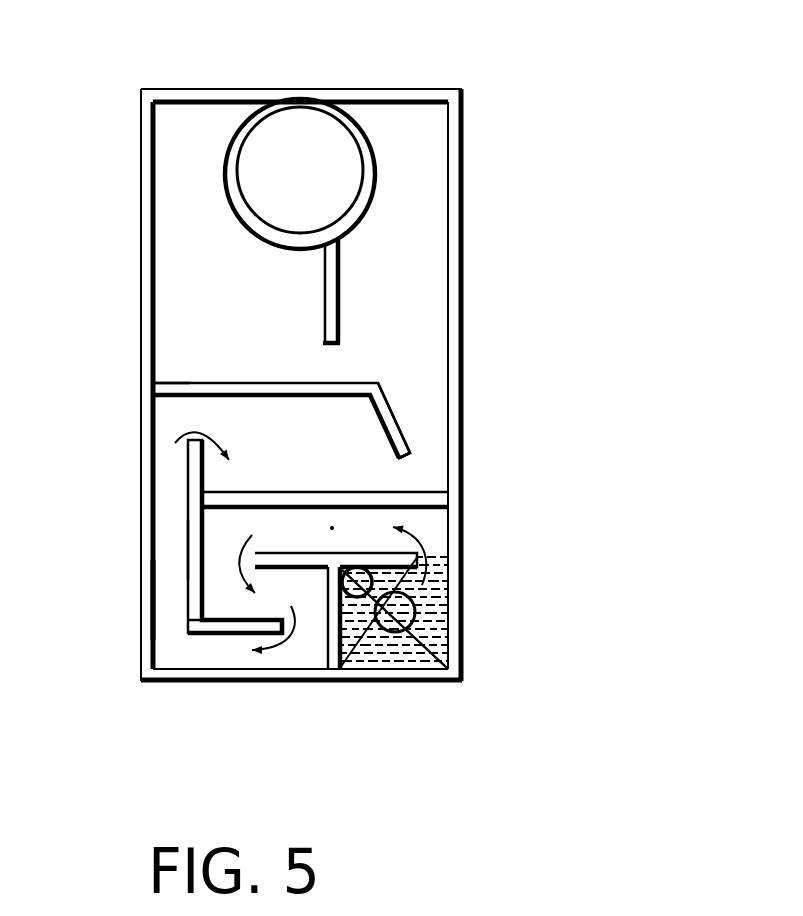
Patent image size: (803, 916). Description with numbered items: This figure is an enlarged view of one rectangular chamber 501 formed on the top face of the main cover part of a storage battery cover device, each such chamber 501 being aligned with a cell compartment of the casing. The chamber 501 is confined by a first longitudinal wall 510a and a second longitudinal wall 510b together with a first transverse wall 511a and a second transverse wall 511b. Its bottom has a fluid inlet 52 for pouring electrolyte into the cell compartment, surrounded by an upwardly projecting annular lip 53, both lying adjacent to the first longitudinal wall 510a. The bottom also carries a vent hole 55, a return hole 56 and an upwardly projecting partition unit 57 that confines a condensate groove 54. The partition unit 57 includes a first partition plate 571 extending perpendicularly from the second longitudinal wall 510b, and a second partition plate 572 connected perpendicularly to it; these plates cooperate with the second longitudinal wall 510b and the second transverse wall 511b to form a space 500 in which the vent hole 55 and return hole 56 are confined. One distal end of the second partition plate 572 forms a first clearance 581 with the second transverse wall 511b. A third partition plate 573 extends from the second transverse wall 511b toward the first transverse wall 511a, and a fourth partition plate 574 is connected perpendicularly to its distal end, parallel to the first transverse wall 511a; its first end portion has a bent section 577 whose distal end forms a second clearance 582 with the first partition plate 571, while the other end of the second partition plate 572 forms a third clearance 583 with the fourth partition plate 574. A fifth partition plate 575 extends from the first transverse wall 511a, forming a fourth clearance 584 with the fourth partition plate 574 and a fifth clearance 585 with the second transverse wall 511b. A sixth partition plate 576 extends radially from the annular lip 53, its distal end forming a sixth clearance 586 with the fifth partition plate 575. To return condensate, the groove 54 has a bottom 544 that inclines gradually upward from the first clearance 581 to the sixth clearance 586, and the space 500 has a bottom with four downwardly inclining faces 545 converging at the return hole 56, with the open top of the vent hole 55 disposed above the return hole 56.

The chamber 501 is at (181, 128).
The first longitudinal wall 510a is at (428, 96).
The second longitudinal wall 510b is at (143, 678).
The first transverse wall 511a is at (148, 172).
The second transverse wall 511b is at (458, 127).
The fluid inlet 52 is at (295, 137).
The annular lip 53 is at (345, 106).
The sixth partition plate 576 is at (335, 272).
The sixth clearance 586 is at (335, 372).
The partition unit 57 is at (405, 408).
The fifth clearance 585 is at (417, 444).
The fifth partition plate 575 is at (183, 385).
The condensate groove 54 is at (181, 458).
The bent section 577 is at (207, 630).
The fourth clearance 584 is at (197, 413).
The third clearance 583 is at (228, 553).
The fourth partition plate 574 is at (197, 548).
The bottom of condensate groove 544 is at (165, 604).
The third partition plate 573 is at (400, 497).
The second partition plate 572 is at (395, 560).
The first partition plate 571 is at (328, 652).
The second clearance 582 is at (333, 648).
The first clearance 581 is at (408, 556).
The downwardly inclining faces 545 is at (395, 655).
The space 500 is at (402, 617).
The vent hole 55 is at (357, 580).
The return hole 56 is at (418, 620).